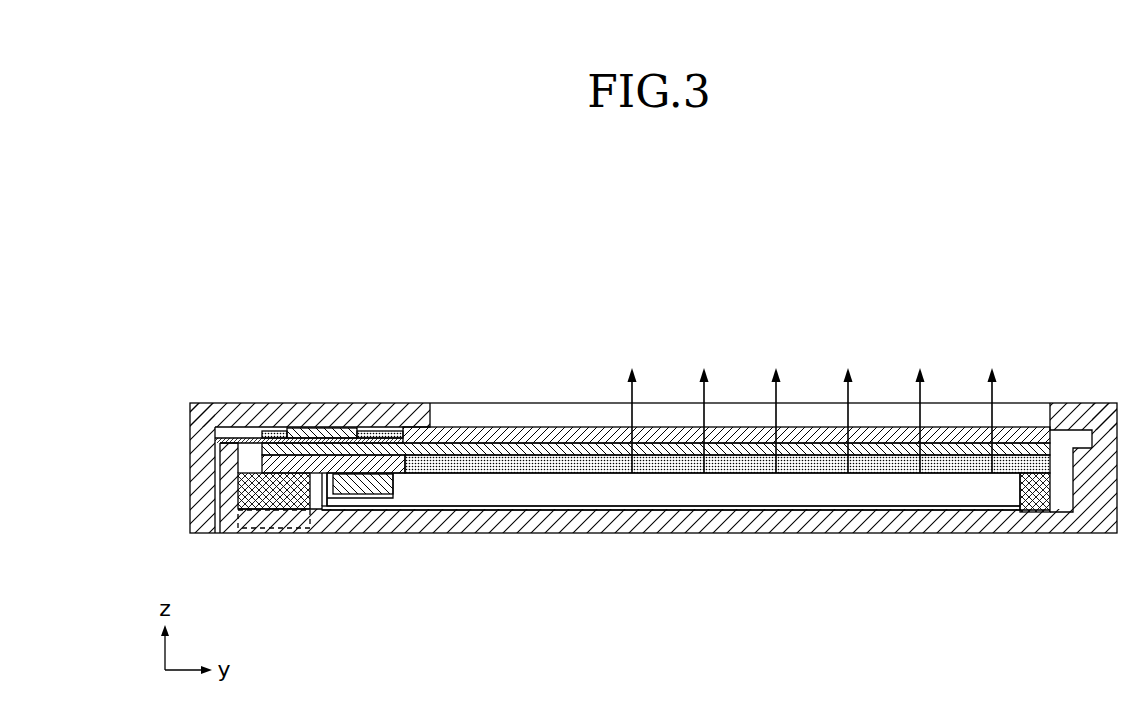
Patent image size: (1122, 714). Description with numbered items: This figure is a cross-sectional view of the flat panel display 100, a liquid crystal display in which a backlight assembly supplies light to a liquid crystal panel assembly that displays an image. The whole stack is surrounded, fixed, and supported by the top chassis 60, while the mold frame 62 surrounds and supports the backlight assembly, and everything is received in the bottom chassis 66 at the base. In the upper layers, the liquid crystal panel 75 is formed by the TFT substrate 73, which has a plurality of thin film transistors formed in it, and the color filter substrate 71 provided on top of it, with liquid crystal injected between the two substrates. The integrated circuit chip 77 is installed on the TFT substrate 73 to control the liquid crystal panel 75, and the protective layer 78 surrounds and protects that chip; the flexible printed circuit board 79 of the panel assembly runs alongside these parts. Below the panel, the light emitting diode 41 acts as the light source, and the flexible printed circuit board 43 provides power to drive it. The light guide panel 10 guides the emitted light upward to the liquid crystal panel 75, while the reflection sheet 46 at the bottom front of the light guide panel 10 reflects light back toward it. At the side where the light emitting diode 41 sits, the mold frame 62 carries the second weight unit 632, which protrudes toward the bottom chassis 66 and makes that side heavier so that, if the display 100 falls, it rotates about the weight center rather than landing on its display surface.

The flat panel display 100 is at (622, 320).
The top chassis 60 is at (228, 414).
The bottom chassis 66 is at (798, 527).
The flexible printed circuit board 79 is at (217, 534).
The protective layer 78 is at (270, 430).
The integrated circuit chip 77 is at (373, 430).
The liquid crystal panel 75 is at (462, 350).
The color filter substrate 71 is at (466, 436).
The TFT substrate 73 is at (504, 452).
The flexible printed circuit board 43 is at (292, 473).
The mold frame 62 is at (252, 492).
The second weight unit 632 is at (273, 530).
The light emitting diode 41 is at (365, 493).
The light guide panel 10 is at (945, 500).
The reflection sheet 46 is at (695, 509).